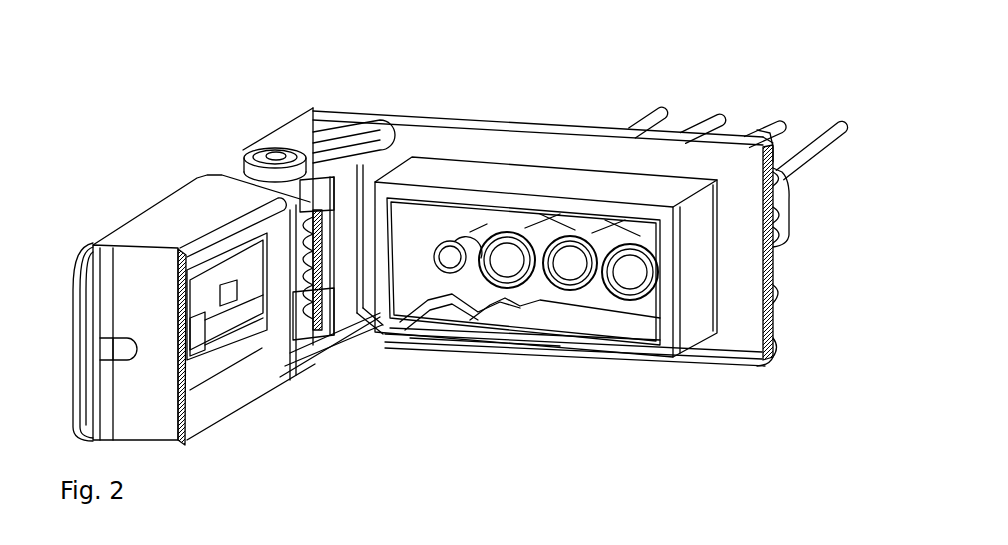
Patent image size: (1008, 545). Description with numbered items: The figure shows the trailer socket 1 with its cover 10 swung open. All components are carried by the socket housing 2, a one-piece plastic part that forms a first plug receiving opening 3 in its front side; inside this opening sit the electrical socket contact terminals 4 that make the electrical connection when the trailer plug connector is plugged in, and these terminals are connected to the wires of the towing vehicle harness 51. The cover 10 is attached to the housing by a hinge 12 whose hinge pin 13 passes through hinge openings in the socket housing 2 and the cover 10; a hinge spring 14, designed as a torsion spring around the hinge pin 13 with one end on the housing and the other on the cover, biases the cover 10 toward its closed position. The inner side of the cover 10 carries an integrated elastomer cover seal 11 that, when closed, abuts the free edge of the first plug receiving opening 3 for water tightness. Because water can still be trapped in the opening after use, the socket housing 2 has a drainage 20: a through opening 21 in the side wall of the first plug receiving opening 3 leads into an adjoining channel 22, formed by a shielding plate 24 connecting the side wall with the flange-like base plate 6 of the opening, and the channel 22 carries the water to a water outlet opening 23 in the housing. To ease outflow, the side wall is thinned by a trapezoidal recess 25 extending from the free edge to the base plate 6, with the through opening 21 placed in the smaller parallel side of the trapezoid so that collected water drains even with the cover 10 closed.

The socket 1 is at (355, 80).
The socket housing 2 is at (418, 140).
The first plug receiving opening 3 is at (646, 325).
The electrical socket contact terminals 4 is at (451, 254).
The base plate 6 is at (750, 347).
The cover 10 is at (182, 213).
The cover seal 11 is at (255, 383).
The hinge 12 is at (273, 124).
The hinge pin 13 is at (277, 153).
The hinge spring 14 is at (305, 208).
The drainage 20 is at (469, 367).
The through opening 21 is at (489, 302).
The channel 22 is at (491, 354).
The water outlet opening 23 is at (537, 350).
The shielding plate 24 is at (440, 347).
The recess 25 is at (451, 298).
The towing vehicle harness 51 is at (806, 120).